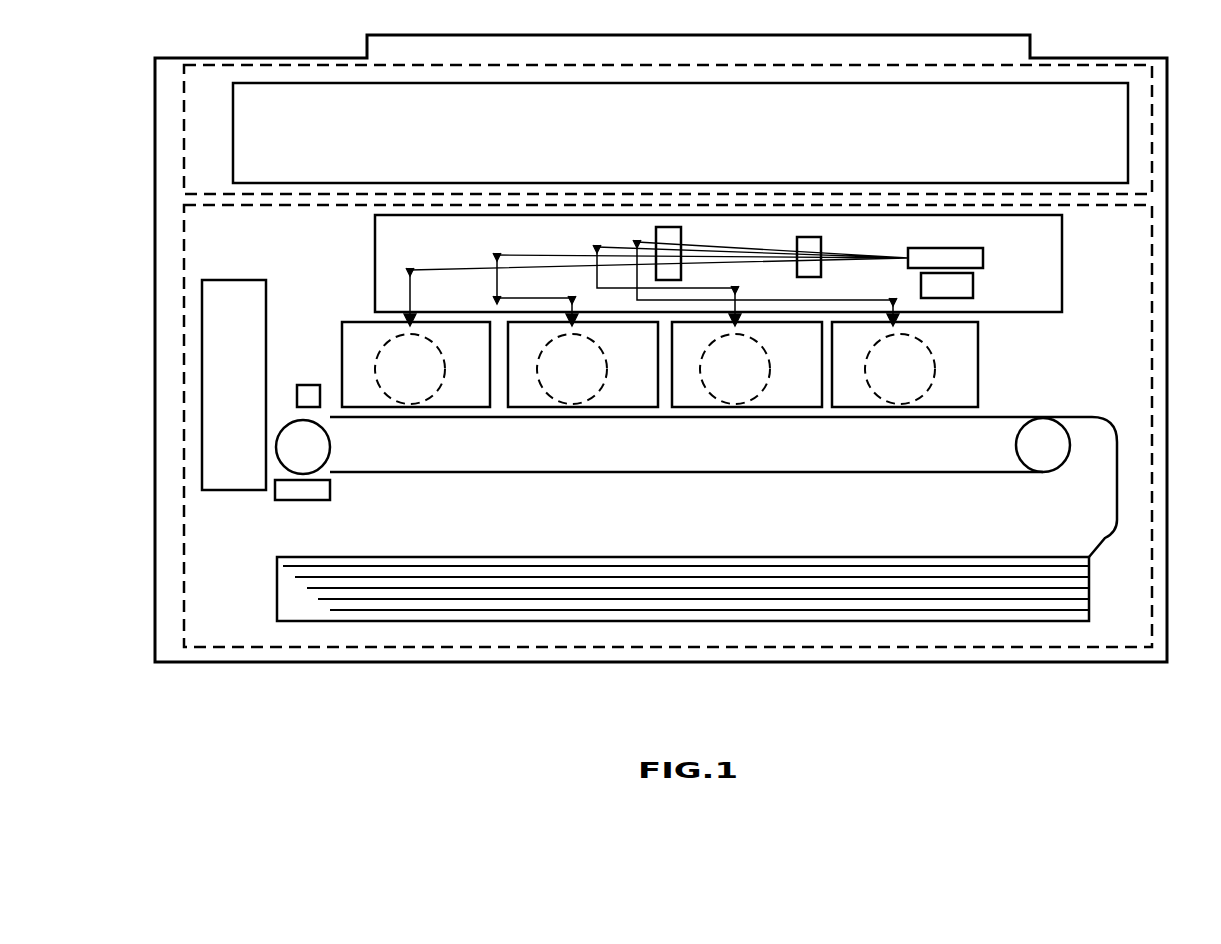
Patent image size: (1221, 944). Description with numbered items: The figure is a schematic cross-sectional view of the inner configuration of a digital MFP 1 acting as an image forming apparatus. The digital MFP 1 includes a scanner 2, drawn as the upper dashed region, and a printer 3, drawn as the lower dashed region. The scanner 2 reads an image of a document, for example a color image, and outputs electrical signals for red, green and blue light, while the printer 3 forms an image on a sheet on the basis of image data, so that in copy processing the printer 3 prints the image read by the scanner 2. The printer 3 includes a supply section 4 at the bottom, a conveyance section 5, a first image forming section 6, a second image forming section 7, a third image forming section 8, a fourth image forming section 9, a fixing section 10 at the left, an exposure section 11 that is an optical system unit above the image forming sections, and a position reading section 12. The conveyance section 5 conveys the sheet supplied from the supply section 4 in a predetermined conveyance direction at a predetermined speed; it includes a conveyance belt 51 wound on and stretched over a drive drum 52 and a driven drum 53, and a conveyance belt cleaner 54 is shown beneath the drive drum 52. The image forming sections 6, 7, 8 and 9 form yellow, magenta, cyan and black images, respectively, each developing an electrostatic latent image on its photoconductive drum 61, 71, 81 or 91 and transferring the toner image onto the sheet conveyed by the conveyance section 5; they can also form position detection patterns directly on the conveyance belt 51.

The digital MFP 1 is at (1081, 666).
The scanner 2 is at (1153, 88).
The printer 3 is at (1153, 476).
The supply section 4 is at (1089, 583).
The conveyance section 5 is at (723, 487).
The first image forming section 6 is at (905, 393).
The second image forming section 7 is at (747, 393).
The third image forming section 8 is at (583, 393).
The fourth image forming section 9 is at (416, 394).
The fixing section 10 is at (232, 492).
The exposure section 11 is at (1062, 262).
The position reading section 12 is at (310, 382).
The conveyance belt 51 is at (662, 476).
The drive drum 52 is at (285, 428).
The driven drum 53 is at (1041, 418).
The belt cleaning unit 54 is at (307, 503).
The photoconductive drum 61 is at (922, 397).
The photoconductive drum 71 is at (760, 398).
The photoconductive drum 81 is at (598, 397).
The photoconductive drum 91 is at (432, 397).